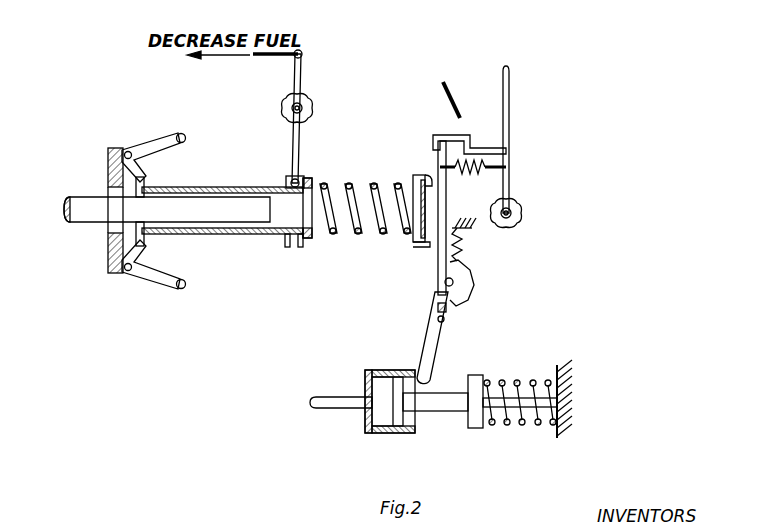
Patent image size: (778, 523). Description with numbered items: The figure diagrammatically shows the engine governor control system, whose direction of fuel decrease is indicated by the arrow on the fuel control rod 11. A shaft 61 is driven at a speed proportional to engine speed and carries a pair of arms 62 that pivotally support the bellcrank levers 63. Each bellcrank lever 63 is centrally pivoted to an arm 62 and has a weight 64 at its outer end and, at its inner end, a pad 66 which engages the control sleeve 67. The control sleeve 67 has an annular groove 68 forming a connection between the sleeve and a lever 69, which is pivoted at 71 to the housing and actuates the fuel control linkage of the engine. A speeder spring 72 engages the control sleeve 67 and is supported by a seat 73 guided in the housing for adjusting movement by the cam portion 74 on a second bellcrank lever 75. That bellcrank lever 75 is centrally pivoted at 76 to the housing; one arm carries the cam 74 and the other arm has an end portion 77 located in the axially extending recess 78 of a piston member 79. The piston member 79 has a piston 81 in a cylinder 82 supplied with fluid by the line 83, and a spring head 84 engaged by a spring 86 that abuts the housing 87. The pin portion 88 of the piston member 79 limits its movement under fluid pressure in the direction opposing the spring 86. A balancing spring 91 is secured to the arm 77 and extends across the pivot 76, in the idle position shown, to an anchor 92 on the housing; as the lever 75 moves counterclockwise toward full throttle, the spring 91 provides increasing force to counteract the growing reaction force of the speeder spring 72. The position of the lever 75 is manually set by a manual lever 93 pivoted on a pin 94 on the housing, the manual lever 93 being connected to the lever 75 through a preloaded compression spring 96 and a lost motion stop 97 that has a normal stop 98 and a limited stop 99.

The fuel control rod 11 is at (253, 57).
The shaft 61 is at (78, 197).
The arms 62 is at (108, 253).
The bellcrank levers 63 is at (157, 145).
The weight 64 is at (182, 132).
The pad 66 is at (142, 180).
The control sleeve 67 is at (228, 187).
The annular groove 68 is at (290, 178).
The lever 69 is at (299, 150).
The pivot 71 is at (288, 105).
The speeder spring 72 is at (331, 238).
The seat 73 is at (413, 177).
The cam portion 74 is at (446, 205).
The bellcrank lever 75 is at (440, 300).
The pivot 76 is at (446, 280).
The end portion 77 is at (420, 368).
The axially extending recess 78 is at (443, 383).
The piston member 79 is at (432, 411).
The piston 81 is at (400, 428).
The cylinder 82 is at (378, 378).
The line 83 is at (348, 408).
The spring head 84 is at (472, 428).
The spring 86 is at (505, 424).
The housing 87 is at (560, 388).
The pin portion 88 is at (528, 397).
The balancing spring 91 is at (470, 286).
The anchor 92 is at (468, 238).
The manual lever 93 is at (509, 85).
The pin 94 is at (512, 212).
The preloaded compression spring 96 is at (510, 167).
The lost motion stop 97 is at (500, 150).
The normal stop 98 is at (433, 138).
The limited stop 99 is at (470, 135).